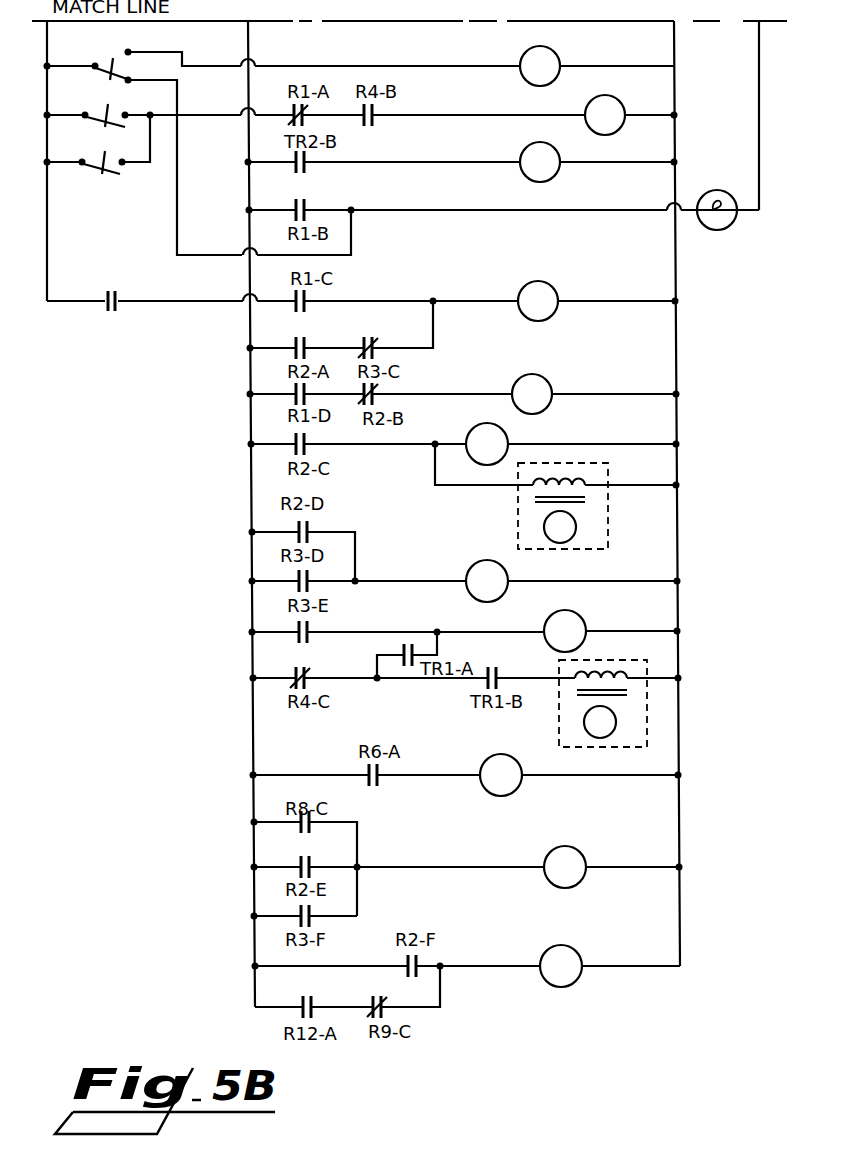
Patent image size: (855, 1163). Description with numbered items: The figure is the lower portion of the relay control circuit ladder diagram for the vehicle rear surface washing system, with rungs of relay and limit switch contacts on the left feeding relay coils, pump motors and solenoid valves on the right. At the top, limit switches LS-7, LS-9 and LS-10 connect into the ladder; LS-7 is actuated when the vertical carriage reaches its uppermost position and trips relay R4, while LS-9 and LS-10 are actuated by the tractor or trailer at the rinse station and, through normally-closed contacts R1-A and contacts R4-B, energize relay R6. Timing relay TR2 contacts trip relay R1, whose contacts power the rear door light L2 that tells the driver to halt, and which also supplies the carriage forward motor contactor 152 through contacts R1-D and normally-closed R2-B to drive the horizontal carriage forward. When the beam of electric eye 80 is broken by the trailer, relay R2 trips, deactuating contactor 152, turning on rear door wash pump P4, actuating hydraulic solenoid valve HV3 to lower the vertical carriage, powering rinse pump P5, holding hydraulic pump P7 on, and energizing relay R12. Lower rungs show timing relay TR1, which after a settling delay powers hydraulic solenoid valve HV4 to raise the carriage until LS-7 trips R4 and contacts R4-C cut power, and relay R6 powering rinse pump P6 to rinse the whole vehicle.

The electric eye 80 is at (113, 283).
The carriage forward motor contactor 152 is at (549, 380).
The rear door light L2 is at (726, 232).
The limit switch LS-7 is at (143, 63).
The limit switch LS-9 is at (143, 109).
The limit switch LS-10 is at (97, 144).
The relay R1 is at (540, 162).
The relay R2 is at (538, 301).
The relay R4 is at (540, 66).
The relay R6 is at (605, 115).
The relay R12 is at (561, 966).
The timing relay TR1 is at (565, 631).
The pump P4 is at (487, 436).
The pump P5 is at (487, 573).
The rinse pump P6 is at (501, 767).
The pump P7 is at (565, 858).
The hydraulic solenoid valve HV3 is at (563, 496).
The hydraulic solenoid valve HV4 is at (603, 695).